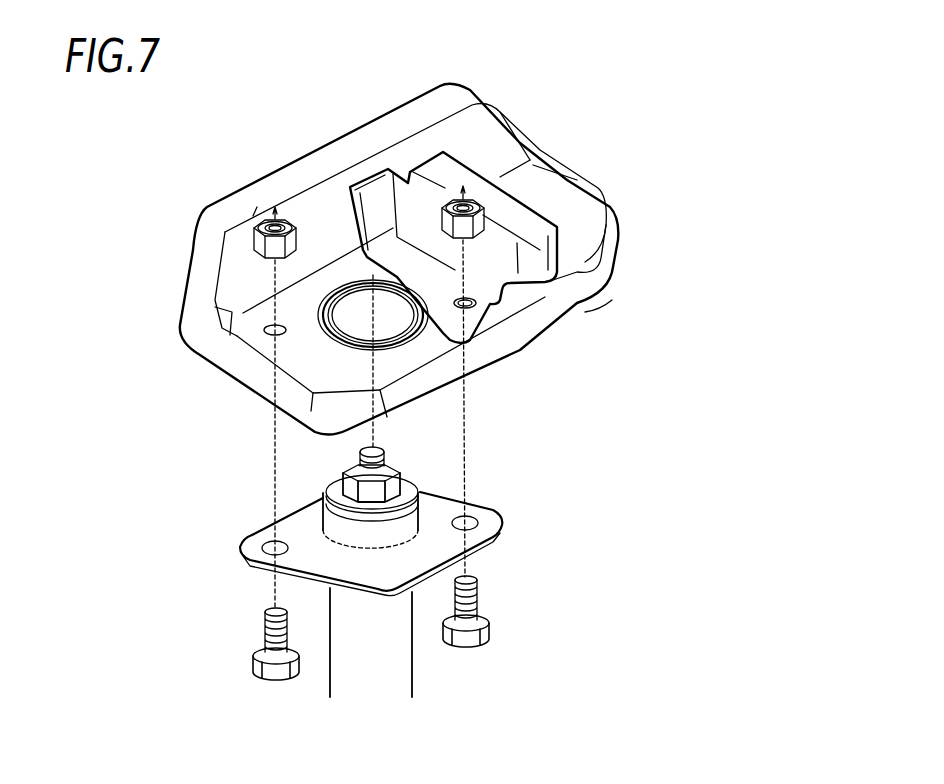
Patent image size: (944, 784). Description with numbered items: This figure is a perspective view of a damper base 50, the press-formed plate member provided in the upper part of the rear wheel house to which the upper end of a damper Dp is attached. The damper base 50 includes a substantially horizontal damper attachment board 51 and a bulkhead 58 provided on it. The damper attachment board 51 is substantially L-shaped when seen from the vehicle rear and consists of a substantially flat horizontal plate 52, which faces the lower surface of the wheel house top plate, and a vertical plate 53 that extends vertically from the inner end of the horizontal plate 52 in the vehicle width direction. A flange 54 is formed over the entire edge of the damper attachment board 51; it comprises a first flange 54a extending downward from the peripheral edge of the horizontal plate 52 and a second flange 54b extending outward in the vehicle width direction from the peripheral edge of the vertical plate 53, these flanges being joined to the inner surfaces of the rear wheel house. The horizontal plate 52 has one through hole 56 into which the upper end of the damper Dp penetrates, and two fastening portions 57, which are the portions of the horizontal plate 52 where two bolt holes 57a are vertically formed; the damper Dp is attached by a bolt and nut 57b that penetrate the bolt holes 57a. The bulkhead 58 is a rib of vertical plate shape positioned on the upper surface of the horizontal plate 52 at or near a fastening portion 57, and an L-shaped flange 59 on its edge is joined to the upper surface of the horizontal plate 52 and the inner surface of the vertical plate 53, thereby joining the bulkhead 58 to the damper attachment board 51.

The damper base 50 is at (672, 164).
The damper attachment board 51 is at (577, 95).
The horizontal plate 52 is at (552, 187).
The vertical plate 53 is at (490, 122).
The flange 54 is at (104, 268).
The first flange 54a is at (203, 338).
The second flange 54b is at (193, 265).
The through hole 56 is at (342, 300).
The fastening portion 57 is at (262, 333).
The bolt hole 57a is at (293, 343).
The bolt and nut 57b is at (262, 635).
The bulkhead 58 is at (547, 274).
The flange 59 is at (483, 314).
The damper Dp is at (407, 673).